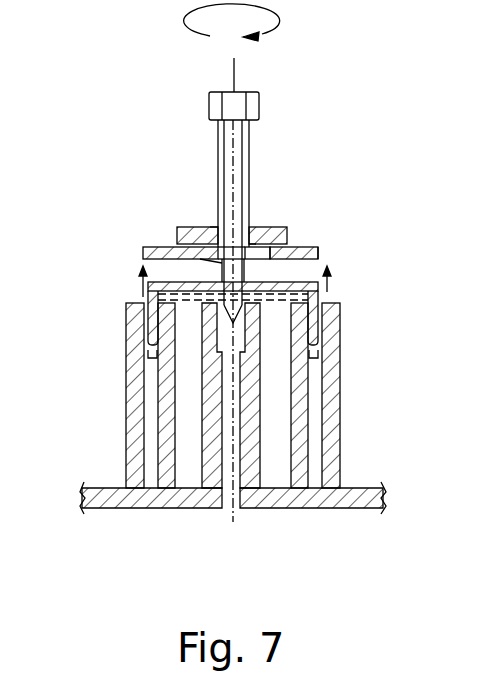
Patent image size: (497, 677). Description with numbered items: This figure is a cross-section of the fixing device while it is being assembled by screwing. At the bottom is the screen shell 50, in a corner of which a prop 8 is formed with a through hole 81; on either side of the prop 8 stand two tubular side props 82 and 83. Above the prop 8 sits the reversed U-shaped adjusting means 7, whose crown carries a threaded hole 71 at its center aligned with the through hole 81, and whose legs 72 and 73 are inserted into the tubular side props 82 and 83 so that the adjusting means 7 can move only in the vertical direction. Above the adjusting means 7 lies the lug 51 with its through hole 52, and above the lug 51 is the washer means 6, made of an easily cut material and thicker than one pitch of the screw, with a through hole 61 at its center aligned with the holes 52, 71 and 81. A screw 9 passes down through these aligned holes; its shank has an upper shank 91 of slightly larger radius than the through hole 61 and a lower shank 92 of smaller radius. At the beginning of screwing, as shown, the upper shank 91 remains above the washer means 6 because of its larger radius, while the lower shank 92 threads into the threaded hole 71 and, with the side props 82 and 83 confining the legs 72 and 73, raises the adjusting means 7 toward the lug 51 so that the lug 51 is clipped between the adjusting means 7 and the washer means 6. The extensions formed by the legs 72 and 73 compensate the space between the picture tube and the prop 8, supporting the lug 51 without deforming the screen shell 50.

The screw 9 is at (243, 172).
The upper shank 91 is at (225, 150).
The through hole 61 is at (215, 226).
The threaded hole 71 is at (246, 242).
The washer means 6 is at (279, 228).
The through hole 52 is at (182, 243).
The lug 51 is at (314, 248).
The lower shank 92 is at (220, 263).
The adjusting means 7 is at (217, 329).
The leg 72 is at (150, 327).
The leg 73 is at (322, 298).
The prop 8 is at (232, 444).
The tubular side prop 82 is at (125, 462).
The through hole 81 is at (223, 460).
The tubular side prop 83 is at (302, 447).
The screen shell 50 is at (343, 503).